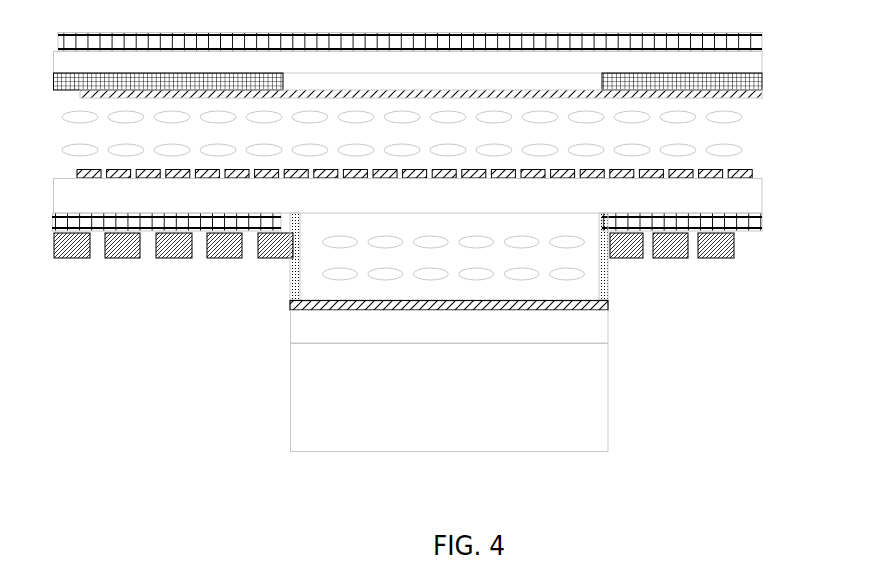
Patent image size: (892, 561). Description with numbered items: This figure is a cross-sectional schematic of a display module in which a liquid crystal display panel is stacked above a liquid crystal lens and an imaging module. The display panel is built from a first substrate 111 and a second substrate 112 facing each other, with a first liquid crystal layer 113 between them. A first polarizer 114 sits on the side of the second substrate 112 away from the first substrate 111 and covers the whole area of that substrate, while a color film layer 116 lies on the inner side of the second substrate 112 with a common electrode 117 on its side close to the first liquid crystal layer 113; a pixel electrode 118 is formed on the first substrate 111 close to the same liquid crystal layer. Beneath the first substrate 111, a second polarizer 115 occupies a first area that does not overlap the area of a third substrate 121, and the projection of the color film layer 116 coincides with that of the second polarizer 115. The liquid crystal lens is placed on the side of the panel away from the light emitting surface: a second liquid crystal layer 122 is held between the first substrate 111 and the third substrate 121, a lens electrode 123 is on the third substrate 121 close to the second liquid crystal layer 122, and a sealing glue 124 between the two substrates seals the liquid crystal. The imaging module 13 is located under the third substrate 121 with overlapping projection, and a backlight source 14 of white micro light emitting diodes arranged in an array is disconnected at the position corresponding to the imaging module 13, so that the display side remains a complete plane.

The imaging module 13 is at (593, 417).
The backlight source 14 is at (738, 243).
The first substrate 111 is at (762, 198).
The second substrate 112 is at (762, 60).
The first liquid crystal layer 113 is at (748, 138).
The first polarizer 114 is at (762, 44).
The second polarizer 115 is at (763, 222).
The color film layer 116 is at (762, 78).
The common electrode 117 is at (762, 94).
The pixel electrode 118 is at (752, 175).
The third substrate 121 is at (608, 328).
The second liquid crystal layer 122 is at (543, 283).
The lens electrode 123 is at (608, 305).
The sealing glue 124 is at (608, 265).